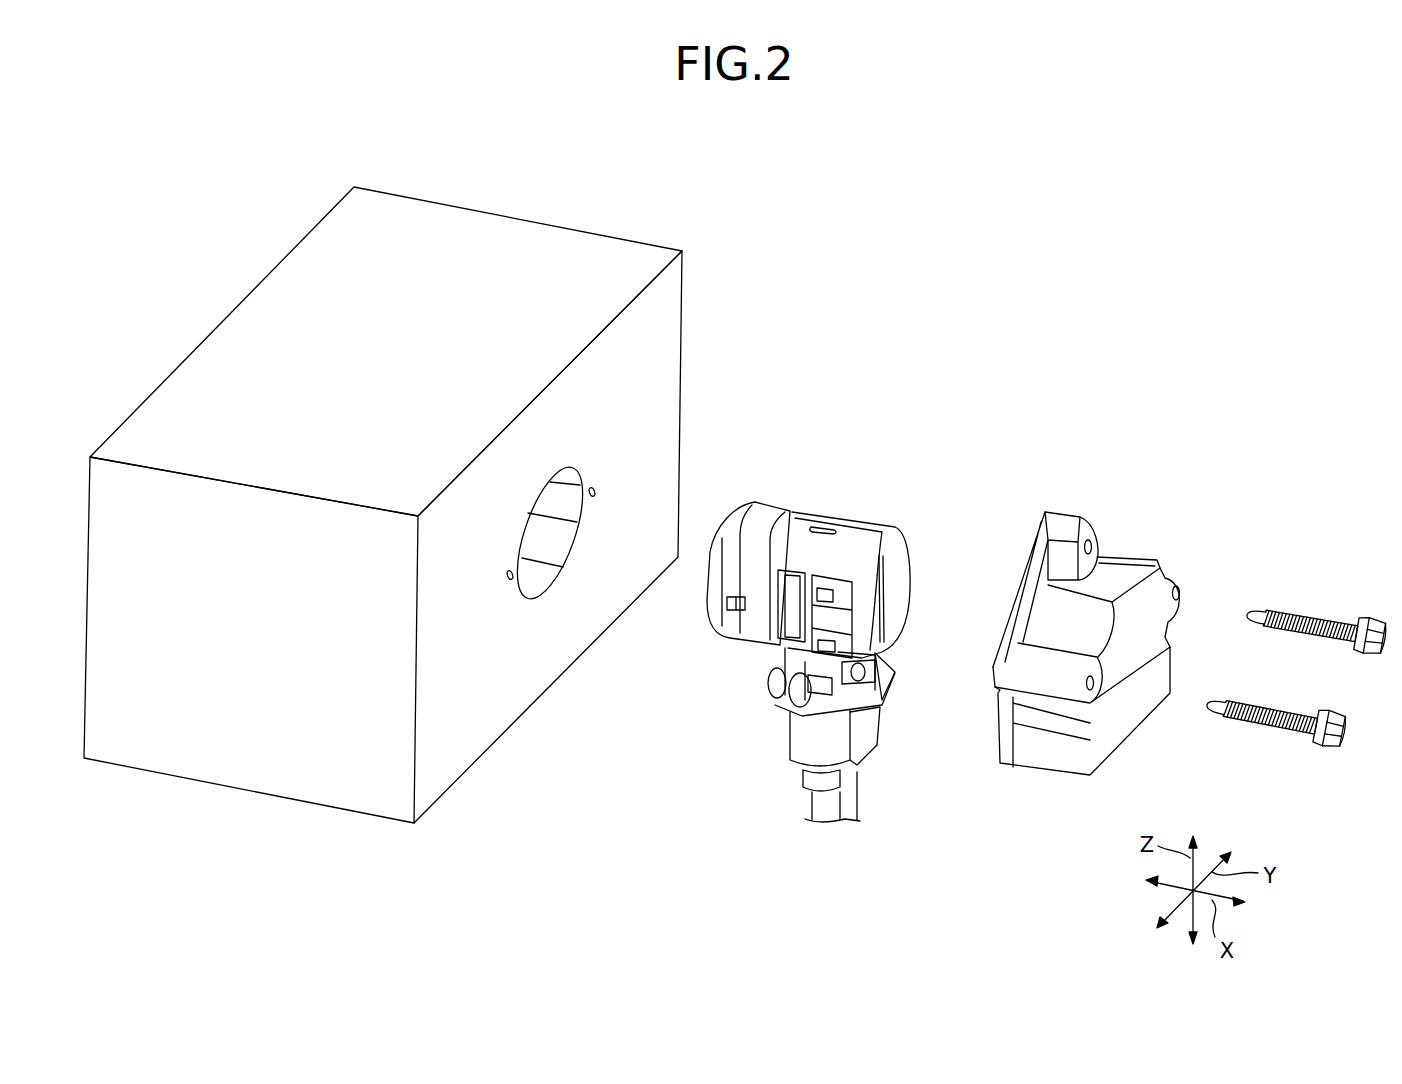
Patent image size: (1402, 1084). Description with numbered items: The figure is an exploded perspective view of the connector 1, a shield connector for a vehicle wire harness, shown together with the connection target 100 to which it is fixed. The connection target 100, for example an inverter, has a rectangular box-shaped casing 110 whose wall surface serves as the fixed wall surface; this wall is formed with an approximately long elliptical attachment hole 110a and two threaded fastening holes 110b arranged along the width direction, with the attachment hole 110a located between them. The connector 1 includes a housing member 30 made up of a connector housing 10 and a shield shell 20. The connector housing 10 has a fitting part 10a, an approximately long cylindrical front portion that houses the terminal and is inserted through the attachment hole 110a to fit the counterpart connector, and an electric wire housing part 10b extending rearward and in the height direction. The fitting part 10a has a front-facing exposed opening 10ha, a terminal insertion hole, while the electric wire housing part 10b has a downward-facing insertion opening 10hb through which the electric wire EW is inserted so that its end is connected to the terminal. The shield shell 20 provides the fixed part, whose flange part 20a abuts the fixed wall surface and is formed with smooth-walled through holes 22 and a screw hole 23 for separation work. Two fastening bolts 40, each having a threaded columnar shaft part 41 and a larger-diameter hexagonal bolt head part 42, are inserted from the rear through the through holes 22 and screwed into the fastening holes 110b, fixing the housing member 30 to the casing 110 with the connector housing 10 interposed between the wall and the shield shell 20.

The connector 1 is at (1272, 460).
The connection target 100 is at (625, 177).
The casing 110 is at (490, 240).
The attachment hole 110a is at (556, 482).
The fastening holes 110b is at (594, 497).
The housing member 30 is at (959, 594).
The connector housing 10 is at (815, 615).
The fitting part 10a is at (754, 502).
The electric wire housing part 10b is at (822, 513).
The exposed opening 10ha is at (706, 603).
The insertion opening 10hb is at (863, 787).
The electric wire EW is at (850, 800).
The shield shell 20 is at (1089, 594).
The flange part 20a is at (1015, 578).
The through holes 22 is at (1182, 596).
The screw hole 23 is at (1086, 546).
The fastening bolts 40 is at (1296, 674).
The shaft part 41 is at (1290, 605).
The bolt head part 42 is at (1349, 674).